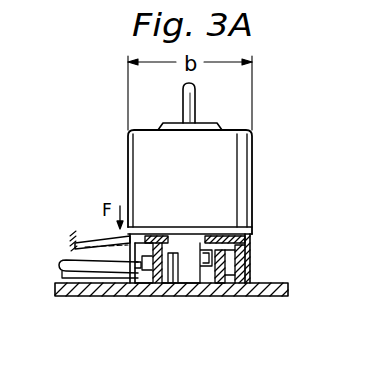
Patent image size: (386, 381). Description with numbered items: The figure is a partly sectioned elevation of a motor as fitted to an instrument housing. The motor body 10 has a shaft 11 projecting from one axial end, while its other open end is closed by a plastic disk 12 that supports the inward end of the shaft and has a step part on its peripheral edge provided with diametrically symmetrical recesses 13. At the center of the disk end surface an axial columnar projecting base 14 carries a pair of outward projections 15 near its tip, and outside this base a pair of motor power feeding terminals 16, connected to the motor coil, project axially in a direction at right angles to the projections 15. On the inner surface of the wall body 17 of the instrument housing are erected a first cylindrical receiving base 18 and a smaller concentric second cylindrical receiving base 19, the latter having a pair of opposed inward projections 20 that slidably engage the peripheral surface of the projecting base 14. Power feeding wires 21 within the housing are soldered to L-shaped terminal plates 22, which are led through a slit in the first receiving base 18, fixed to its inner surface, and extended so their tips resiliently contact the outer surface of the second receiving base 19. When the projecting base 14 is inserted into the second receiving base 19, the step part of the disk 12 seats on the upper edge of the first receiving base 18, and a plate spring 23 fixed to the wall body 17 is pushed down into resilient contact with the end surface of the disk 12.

The motor body 10 is at (233, 168).
The shaft 11 is at (195, 96).
The plastic disk 12 is at (248, 233).
The recesses 13 is at (142, 236).
The columnar projecting base 14 is at (203, 282).
The outward projections 15 is at (238, 258).
The motor power feeding terminals 16 is at (183, 272).
The wall body 17 is at (288, 296).
The first cylindrical receiving base 18 is at (250, 278).
The second cylindrical receiving base 19 is at (250, 296).
The inward projections 20 is at (203, 245).
The power feeding wires 21 is at (70, 266).
The power feeding terminal plate 22 is at (225, 283).
The plate spring 23 is at (95, 236).